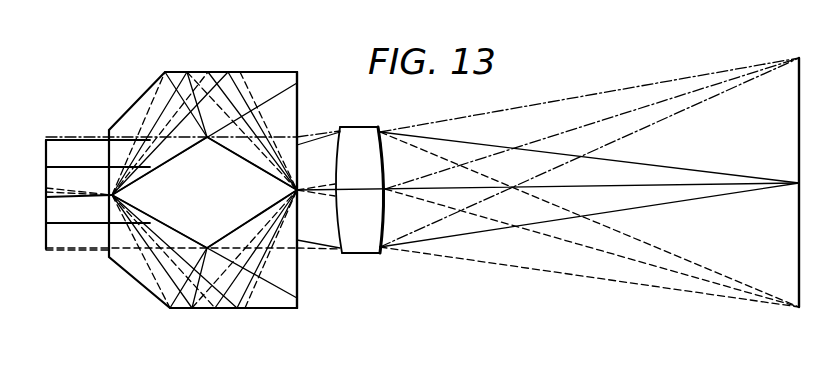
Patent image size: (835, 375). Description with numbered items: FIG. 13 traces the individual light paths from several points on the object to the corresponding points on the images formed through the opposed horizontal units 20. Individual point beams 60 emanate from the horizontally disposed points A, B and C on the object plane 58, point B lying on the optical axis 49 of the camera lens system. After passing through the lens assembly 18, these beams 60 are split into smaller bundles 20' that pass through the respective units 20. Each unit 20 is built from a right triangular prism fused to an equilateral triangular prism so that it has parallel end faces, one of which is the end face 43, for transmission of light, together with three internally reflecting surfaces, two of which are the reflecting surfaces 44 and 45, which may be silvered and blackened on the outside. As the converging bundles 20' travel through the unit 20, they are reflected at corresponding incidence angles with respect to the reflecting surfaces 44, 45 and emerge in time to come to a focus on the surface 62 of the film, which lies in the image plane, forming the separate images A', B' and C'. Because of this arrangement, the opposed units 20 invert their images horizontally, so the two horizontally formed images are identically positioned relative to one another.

The unit 20 is at (171, 190).
The smaller bundles 20' is at (88, 192).
The lens assembly 18 is at (373, 265).
The end face 43 is at (298, 100).
The internally reflecting surface 44 is at (143, 213).
The internally reflecting surface 45 is at (263, 178).
The optical axis 49 is at (606, 184).
The object plane 58 is at (797, 232).
The point beams 60 is at (728, 102).
The surface of the film 62 is at (48, 142).